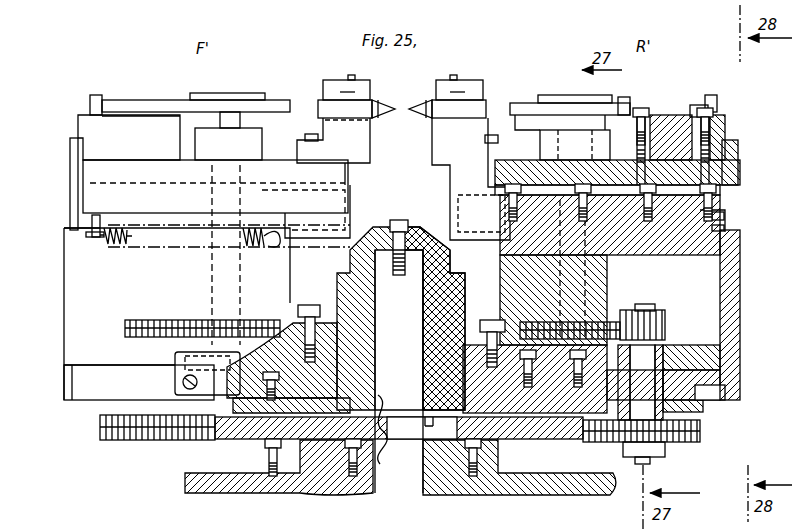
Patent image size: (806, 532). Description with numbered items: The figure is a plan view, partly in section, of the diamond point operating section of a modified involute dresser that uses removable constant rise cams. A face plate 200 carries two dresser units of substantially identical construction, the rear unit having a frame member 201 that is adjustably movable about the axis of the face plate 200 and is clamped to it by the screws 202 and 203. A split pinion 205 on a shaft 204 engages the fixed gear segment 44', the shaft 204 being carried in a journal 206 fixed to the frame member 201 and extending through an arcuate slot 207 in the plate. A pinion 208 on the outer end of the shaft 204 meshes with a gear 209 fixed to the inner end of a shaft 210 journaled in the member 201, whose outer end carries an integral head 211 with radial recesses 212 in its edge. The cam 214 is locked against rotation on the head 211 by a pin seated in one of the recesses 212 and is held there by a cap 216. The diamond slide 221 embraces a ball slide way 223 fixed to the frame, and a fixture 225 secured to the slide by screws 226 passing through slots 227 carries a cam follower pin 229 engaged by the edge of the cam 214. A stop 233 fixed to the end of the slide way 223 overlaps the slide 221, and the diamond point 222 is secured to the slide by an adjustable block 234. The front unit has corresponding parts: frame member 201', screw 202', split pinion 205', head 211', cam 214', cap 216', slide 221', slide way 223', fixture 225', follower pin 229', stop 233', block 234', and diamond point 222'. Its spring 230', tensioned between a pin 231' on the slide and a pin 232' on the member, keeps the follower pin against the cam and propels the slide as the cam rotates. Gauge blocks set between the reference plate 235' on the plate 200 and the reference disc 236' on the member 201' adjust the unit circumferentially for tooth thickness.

The cam follower pin 229' is at (77, 93).
The cam 214' is at (196, 93).
The cap 216' is at (229, 85).
The fixture 225' is at (103, 137).
The head 211' is at (247, 136).
The stop 233' is at (48, 184).
The diamond slide 221' is at (238, 199).
The pin 231' is at (118, 217).
The ball slide way 223' is at (59, 226).
The frame member 201' is at (182, 282).
The face plate 200 is at (64, 392).
The spring 230' is at (108, 255).
The pin 232' is at (262, 256).
The reference disc 236' is at (202, 314).
The reference plate 235' is at (170, 371).
The screw 202' is at (311, 320).
The split pinion 205' is at (146, 442).
The fixed gear segment 44' is at (399, 444).
The adjustable block 234' is at (356, 151).
The diamond point 222' is at (362, 90).
The diamond point 222 is at (444, 96).
The adjustable block 234 is at (456, 179).
The head 211 is at (562, 139).
The cap 216 is at (572, 87).
The recesses 212 is at (584, 116).
The cam 214 is at (588, 103).
The fixture 225 is at (683, 113).
The cam follower pin 229 is at (736, 91).
The screws 226 is at (710, 111).
The slots 227 is at (722, 131).
The stop 233 is at (637, 162).
The diamond slide 221 is at (637, 194).
The ball slide way 223 is at (739, 221).
The shaft 210 is at (590, 268).
The gear 209 is at (606, 322).
The pinion 208 is at (665, 323).
The journal 206 is at (675, 349).
The shaft 204 is at (640, 382).
The screw 202 is at (489, 333).
The arcuate slot 207 is at (665, 406).
The screw 203 is at (714, 402).
The split pinion 205 is at (666, 442).
The frame member 201 is at (749, 315).